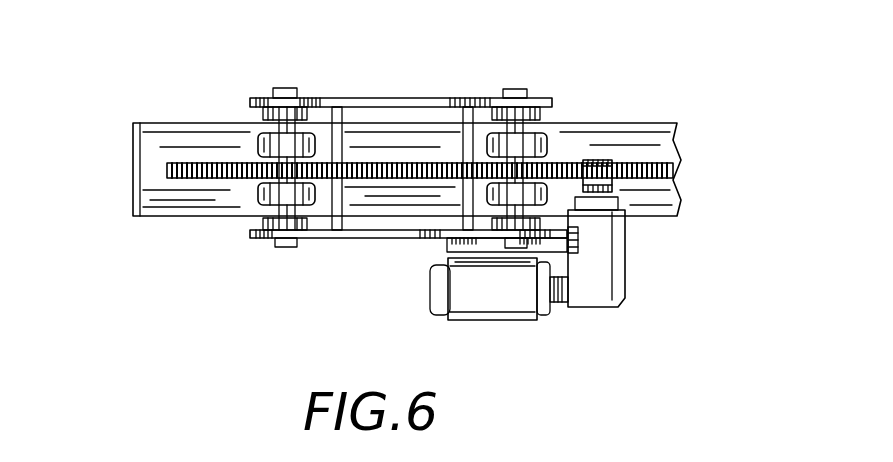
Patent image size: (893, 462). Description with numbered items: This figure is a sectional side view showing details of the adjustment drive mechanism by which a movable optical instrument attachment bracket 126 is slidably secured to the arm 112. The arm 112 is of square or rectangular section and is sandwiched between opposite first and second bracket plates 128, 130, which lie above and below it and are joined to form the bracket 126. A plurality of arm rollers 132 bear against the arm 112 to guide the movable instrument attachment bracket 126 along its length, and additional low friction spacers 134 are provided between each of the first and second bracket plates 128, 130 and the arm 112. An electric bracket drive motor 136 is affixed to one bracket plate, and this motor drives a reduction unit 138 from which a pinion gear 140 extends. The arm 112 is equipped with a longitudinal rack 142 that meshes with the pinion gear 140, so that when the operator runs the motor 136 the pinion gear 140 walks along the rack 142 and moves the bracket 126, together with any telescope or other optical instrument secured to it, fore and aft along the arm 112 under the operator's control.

The arm 112 is at (170, 216).
The movable optical instrument attachment bracket 126 is at (284, 340).
The first bracket plate 128 is at (418, 98).
The second bracket plate 130 is at (401, 238).
The arm roller 132 is at (262, 140).
The low friction spacer 134 is at (313, 99).
The electric bracket drive motor 136 is at (466, 320).
The reduction unit 138 is at (625, 270).
The pinion gear 140 is at (615, 168).
The longitudinal rack 142 is at (167, 170).